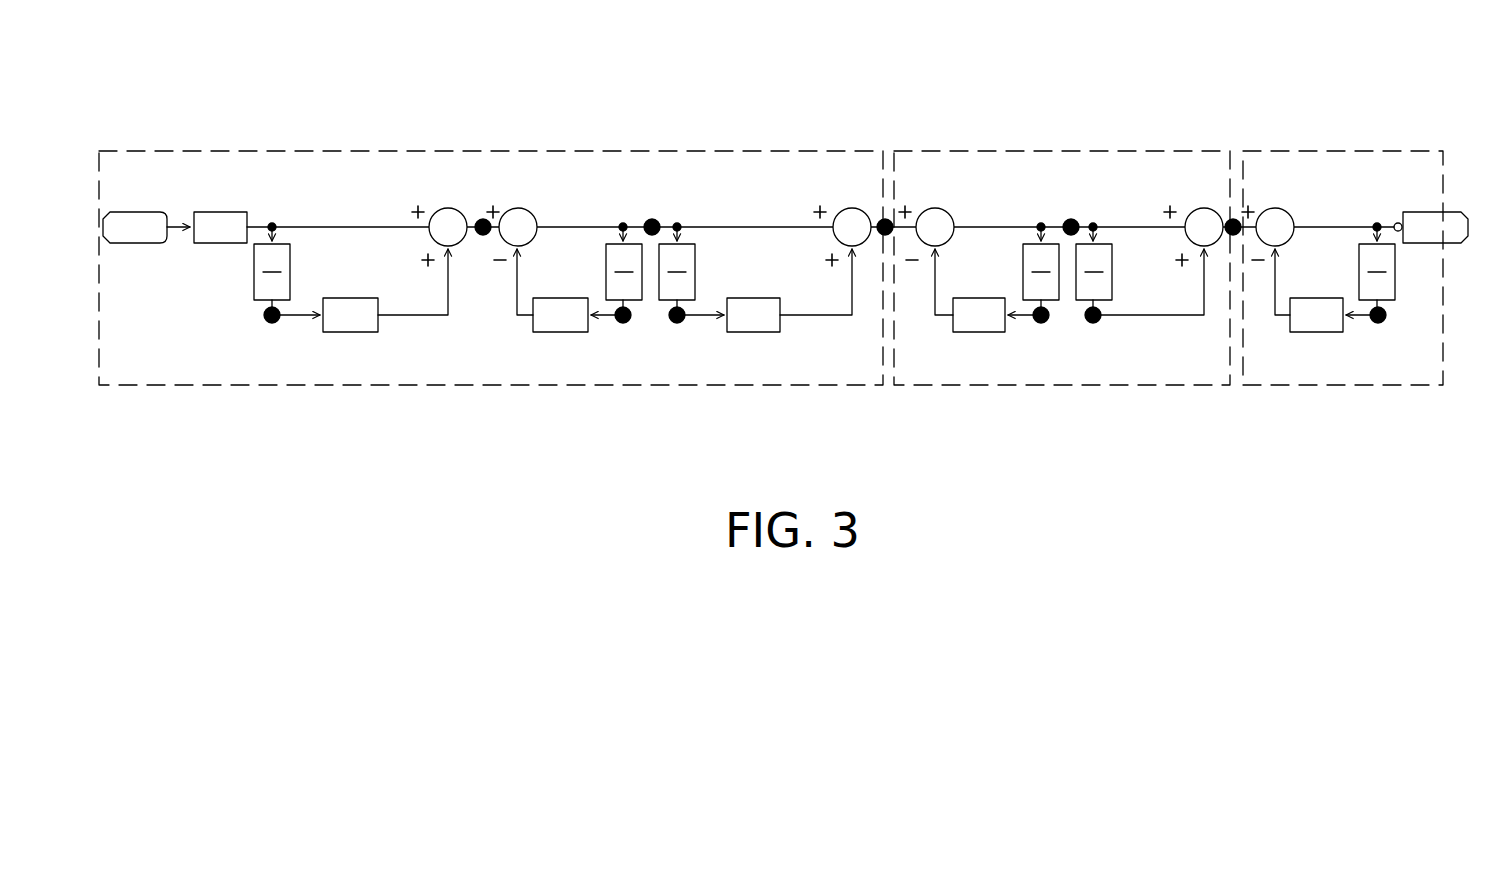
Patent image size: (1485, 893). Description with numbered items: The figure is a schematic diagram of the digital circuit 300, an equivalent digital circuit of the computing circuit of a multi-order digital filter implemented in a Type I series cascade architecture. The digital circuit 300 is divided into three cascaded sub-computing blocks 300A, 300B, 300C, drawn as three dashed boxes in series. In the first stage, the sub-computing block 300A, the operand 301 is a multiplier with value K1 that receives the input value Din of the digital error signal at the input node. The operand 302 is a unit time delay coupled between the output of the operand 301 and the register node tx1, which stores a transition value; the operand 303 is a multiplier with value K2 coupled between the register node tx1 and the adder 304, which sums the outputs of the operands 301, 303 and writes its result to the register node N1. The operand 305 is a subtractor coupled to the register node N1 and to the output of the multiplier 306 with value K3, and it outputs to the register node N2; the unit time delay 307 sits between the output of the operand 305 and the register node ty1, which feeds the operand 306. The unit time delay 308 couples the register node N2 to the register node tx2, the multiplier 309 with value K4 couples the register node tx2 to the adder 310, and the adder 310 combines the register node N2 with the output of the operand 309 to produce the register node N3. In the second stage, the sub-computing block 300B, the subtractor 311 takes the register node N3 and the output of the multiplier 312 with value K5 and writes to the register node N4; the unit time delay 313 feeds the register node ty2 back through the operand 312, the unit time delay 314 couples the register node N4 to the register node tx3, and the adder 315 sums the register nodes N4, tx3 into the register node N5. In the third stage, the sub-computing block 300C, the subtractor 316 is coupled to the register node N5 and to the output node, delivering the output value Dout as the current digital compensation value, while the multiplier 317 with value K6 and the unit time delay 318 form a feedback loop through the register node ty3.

The digital circuit 300 is at (1468, 481).
The sub-computing block 300A is at (773, 151).
The sub-computing block 300B is at (973, 151).
The sub-computing block 300C is at (1262, 151).
The operand 301 is at (220, 212).
The operand 302 is at (254, 283).
The operand 303 is at (350, 333).
The operand 304 is at (444, 209).
The operand 305 is at (517, 209).
The operand 306 is at (560, 333).
The operand 307 is at (637, 300).
The operand 308 is at (695, 256).
The operand 309 is at (752, 333).
The operand 310 is at (849, 209).
The operand 311 is at (935, 209).
The operand 312 is at (980, 333).
The operand 313 is at (1022, 267).
The operand 314 is at (1128, 258).
The operand 315 is at (1200, 209).
The operand 316 is at (1290, 214).
The operand 317 is at (1314, 333).
The operand 318 is at (1396, 288).
The register node N1 is at (483, 220).
The register node N2 is at (652, 220).
The register node N3 is at (885, 220).
The register node N4 is at (1071, 220).
The register node N5 is at (1233, 220).
The register node tx1 is at (272, 323).
The register node ty1 is at (623, 323).
The register node tx2 is at (677, 323).
The register node ty2 is at (1041, 323).
The register node tx3 is at (1093, 323).
The register node ty3 is at (1378, 323).